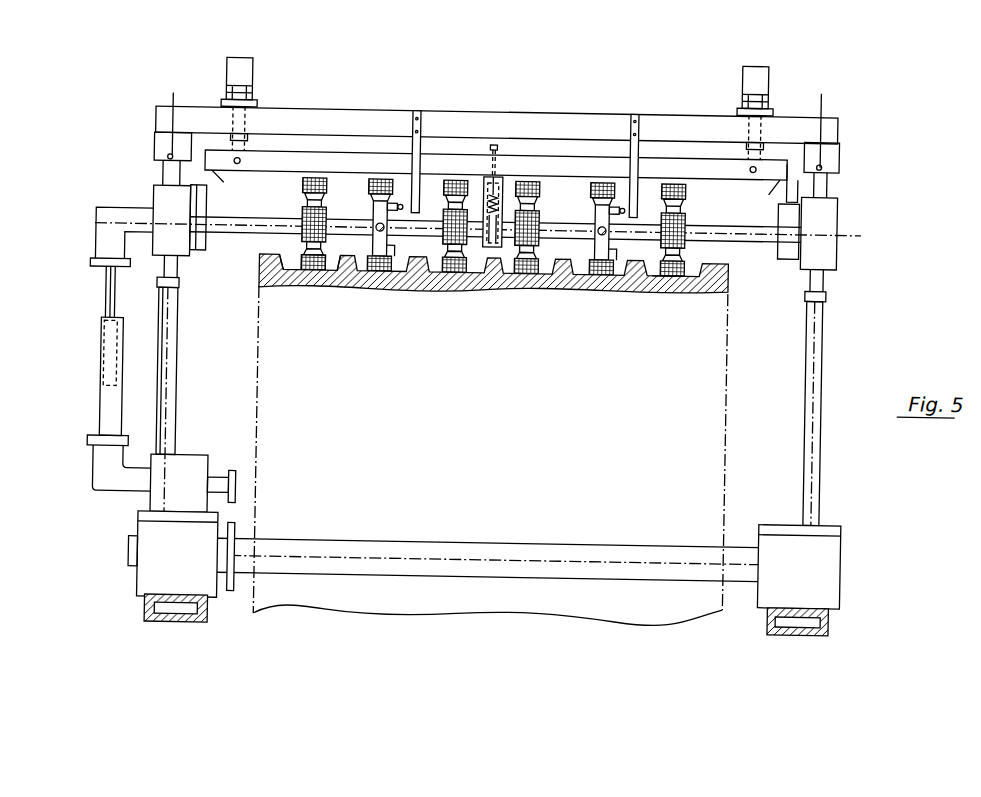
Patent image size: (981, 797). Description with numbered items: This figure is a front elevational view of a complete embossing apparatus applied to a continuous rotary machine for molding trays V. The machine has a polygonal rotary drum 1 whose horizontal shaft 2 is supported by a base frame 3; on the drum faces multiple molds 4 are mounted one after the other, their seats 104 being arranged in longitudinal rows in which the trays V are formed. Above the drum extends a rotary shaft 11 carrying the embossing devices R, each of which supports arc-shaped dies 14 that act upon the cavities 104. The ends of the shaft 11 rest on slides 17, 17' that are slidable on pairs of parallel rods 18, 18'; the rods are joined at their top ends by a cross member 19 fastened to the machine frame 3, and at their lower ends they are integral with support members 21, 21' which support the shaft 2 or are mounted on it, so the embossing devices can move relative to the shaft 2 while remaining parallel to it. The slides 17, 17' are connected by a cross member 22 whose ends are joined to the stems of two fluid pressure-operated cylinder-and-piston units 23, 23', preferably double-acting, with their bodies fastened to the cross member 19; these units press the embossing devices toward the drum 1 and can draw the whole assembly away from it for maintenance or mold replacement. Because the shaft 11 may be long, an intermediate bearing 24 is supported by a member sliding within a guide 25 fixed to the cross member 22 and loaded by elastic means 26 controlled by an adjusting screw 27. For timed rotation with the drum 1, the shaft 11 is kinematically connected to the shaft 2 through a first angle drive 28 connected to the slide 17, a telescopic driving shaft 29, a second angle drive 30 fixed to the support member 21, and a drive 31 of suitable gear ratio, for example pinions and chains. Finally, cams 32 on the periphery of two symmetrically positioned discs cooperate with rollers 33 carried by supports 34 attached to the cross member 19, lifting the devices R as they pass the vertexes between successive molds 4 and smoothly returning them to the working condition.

The polygonal rotary drum 1 is at (729, 411).
The horizontal shaft 2 is at (528, 550).
The base frame 3 is at (149, 624).
The multiple molds 4 is at (727, 281).
The shaft 11 is at (227, 240).
The dies 14 is at (305, 273).
The slide 17 is at (158, 174).
The slide 17' is at (843, 181).
The parallel rods 18 is at (186, 387).
The parallel rods 18' is at (836, 401).
The cross member 19 is at (585, 118).
The support member 21 is at (162, 526).
The support member 21' is at (826, 567).
The cross member 22 is at (268, 158).
The fluid pressure-operated cylinder-and-piston unit 23 is at (239, 84).
The fluid pressure-operated cylinder-and-piston unit 23' is at (769, 96).
The bearing 24 is at (488, 247).
The guide 25 is at (495, 248).
The elastic means 26 is at (497, 200).
The adjusting screw 27 is at (491, 146).
The first angle drive 28 is at (103, 215).
The driving shaft 29 is at (101, 335).
The second angle drive 30 is at (107, 498).
The drive 31 is at (238, 524).
The cams 32 is at (382, 270).
The rollers 33 is at (395, 208).
The supports 34 is at (409, 141).
The seats 104 is at (656, 273).
The embossing devices R is at (316, 178).
The trays V is at (300, 285).